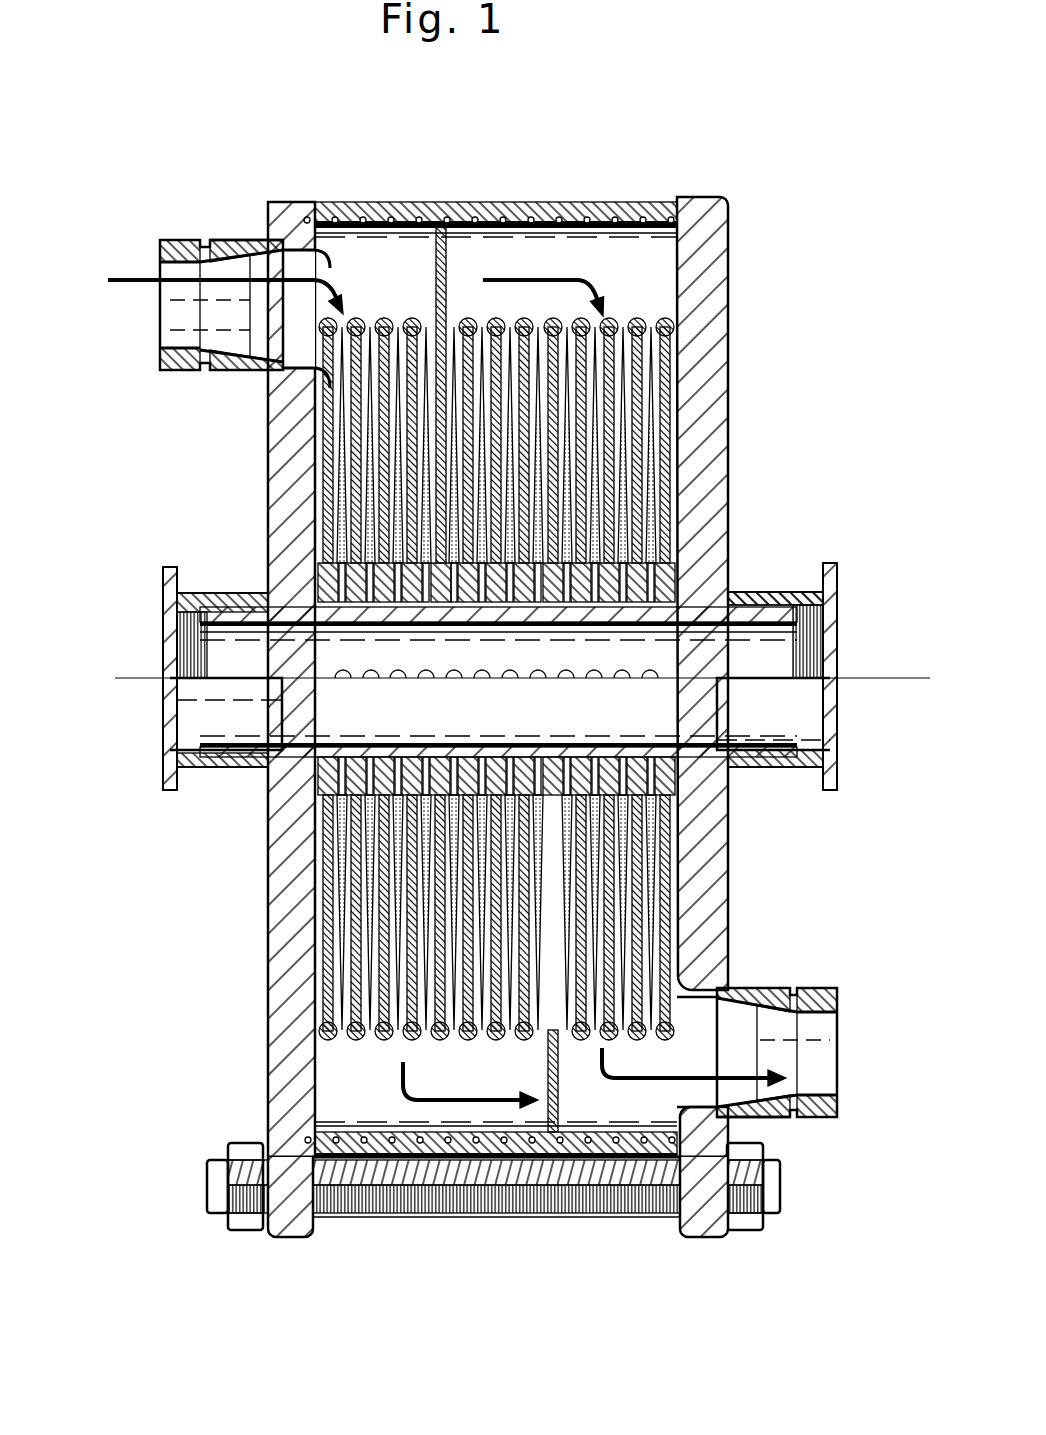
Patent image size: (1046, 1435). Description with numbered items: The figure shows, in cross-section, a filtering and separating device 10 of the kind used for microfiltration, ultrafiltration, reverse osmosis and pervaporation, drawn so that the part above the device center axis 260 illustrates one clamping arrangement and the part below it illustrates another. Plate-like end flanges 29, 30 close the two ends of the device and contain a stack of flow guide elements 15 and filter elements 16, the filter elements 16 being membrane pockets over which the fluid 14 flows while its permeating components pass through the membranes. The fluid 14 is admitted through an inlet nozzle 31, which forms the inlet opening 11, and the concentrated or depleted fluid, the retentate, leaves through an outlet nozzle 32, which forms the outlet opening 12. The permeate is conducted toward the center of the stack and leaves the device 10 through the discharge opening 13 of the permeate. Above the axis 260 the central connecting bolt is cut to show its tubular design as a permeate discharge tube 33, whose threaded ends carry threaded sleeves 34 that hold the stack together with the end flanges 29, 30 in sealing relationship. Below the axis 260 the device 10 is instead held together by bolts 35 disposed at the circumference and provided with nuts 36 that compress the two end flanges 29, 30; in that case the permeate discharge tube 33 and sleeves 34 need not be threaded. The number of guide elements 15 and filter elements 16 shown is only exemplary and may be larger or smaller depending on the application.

The device 10 is at (681, 152).
The inlet opening 11 is at (178, 318).
The outlet opening 12 is at (817, 1070).
The discharge opening 13 is at (183, 703).
The fluid 14 is at (530, 275).
The guide elements 15 is at (612, 325).
The filter elements 16 is at (235, 590).
The end flange 29 is at (268, 432).
The end flange 30 is at (712, 465).
The inlet nozzle 31 is at (228, 240).
The outlet nozzle 32 is at (818, 1118).
The permeate discharge tube 33 is at (742, 600).
The threaded sleeves 34 is at (340, 500).
The bolts 35 is at (395, 1213).
The nuts 36 is at (240, 1226).
The device center axis 260 is at (855, 672).